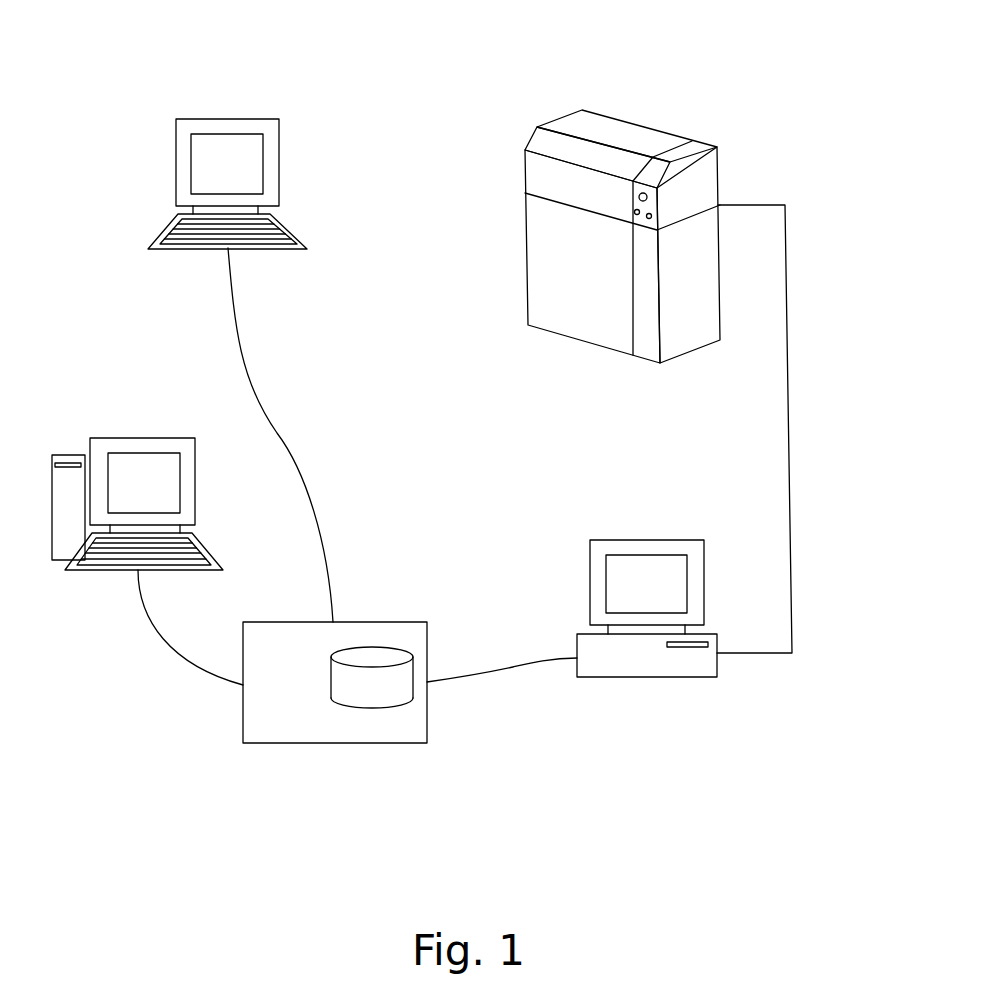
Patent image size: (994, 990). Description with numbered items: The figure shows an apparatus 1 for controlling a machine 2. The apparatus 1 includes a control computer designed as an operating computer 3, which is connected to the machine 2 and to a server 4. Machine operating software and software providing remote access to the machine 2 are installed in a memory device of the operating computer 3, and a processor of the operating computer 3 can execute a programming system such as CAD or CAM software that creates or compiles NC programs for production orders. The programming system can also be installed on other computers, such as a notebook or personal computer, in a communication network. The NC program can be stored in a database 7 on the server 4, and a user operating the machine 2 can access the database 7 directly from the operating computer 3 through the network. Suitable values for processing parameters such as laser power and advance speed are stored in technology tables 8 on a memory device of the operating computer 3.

The apparatus 1 is at (562, 511).
The machine 2 is at (640, 137).
The operating computer 3 is at (648, 540).
The server 4 is at (279, 716).
The database 7 is at (385, 690).
The technology tables 8 is at (632, 658).